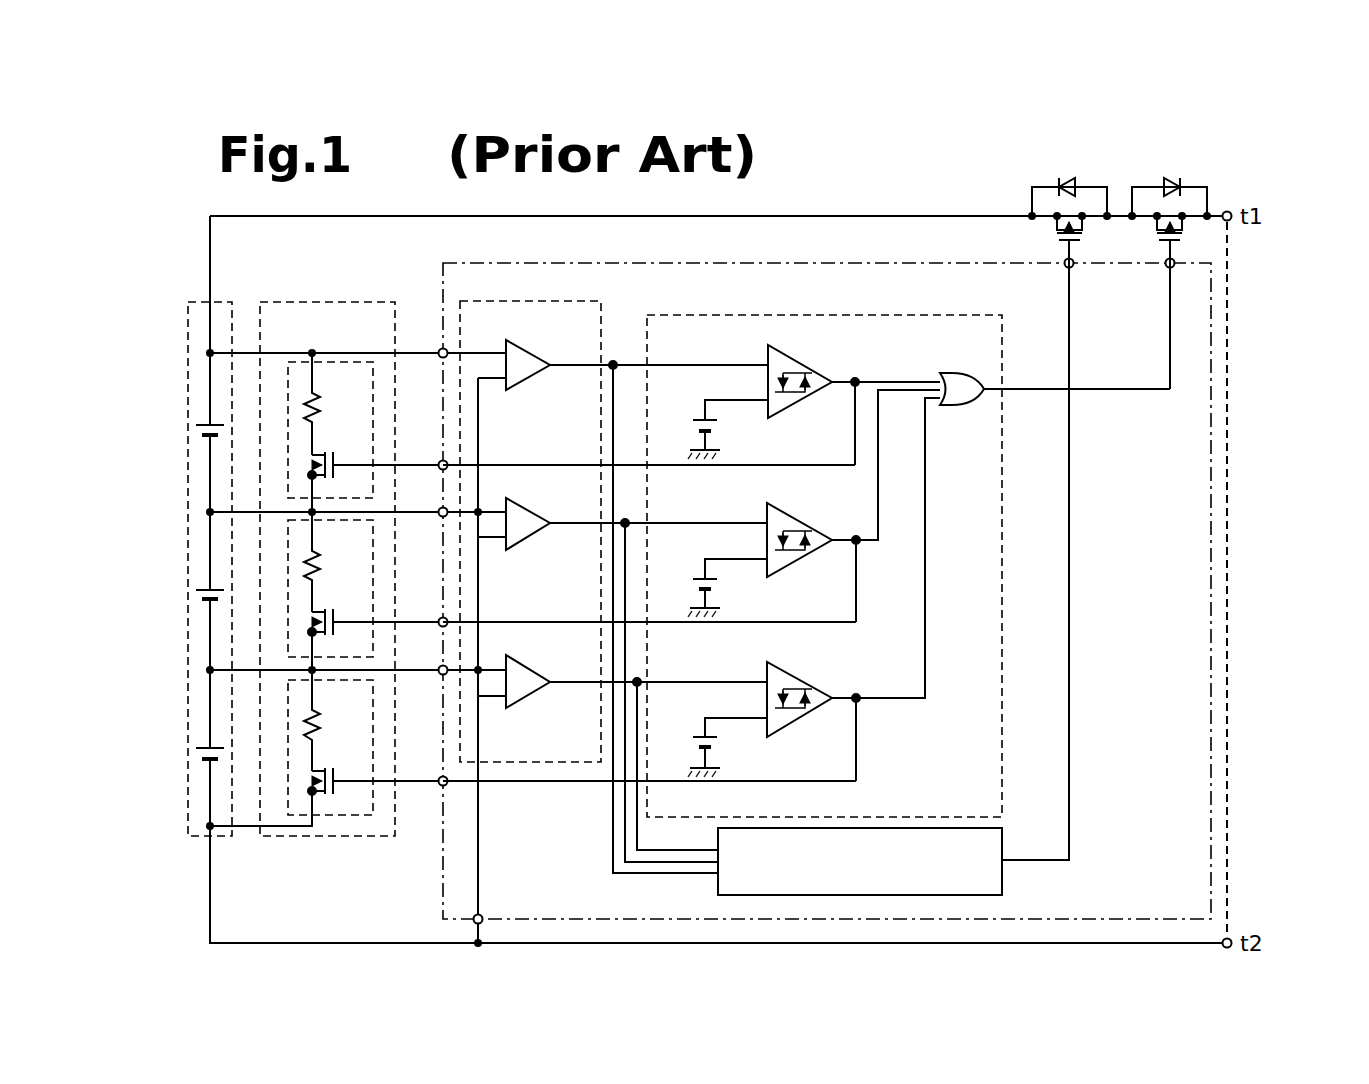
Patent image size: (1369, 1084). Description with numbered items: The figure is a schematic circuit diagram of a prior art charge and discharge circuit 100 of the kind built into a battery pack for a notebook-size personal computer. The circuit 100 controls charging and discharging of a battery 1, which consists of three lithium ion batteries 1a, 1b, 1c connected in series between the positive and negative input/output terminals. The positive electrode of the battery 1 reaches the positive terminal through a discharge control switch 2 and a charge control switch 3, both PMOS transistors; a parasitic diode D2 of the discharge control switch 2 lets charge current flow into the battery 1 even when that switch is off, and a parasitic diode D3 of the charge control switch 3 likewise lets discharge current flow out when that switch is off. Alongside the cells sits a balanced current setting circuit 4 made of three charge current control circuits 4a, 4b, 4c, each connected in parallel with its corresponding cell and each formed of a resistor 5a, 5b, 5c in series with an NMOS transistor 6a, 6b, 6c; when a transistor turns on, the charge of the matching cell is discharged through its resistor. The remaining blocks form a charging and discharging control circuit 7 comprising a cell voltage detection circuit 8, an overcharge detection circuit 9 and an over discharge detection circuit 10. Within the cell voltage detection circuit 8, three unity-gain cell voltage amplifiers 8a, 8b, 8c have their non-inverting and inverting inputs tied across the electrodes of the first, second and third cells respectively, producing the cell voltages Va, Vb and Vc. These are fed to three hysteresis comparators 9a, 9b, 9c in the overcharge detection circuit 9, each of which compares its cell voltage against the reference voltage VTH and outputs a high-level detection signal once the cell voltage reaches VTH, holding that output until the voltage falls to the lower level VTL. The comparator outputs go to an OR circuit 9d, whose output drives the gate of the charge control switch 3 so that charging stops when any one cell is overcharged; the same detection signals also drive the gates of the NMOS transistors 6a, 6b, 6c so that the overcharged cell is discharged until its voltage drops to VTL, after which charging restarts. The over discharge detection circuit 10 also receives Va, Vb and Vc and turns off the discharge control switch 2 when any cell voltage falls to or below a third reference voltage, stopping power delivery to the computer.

The battery 1 is at (192, 303).
The first lithium ion battery 1a is at (200, 425).
The second lithium ion battery 1b is at (200, 590).
The third lithium ion battery 1c is at (200, 748).
The discharge control switch 2 is at (1045, 180).
The charge control switch 3 is at (1192, 180).
The balanced current setting circuit 4 is at (365, 303).
The first charge current control circuit 4a is at (376, 385).
The second charge current control circuit 4b is at (376, 545).
The third charge current control circuit 4c is at (376, 705).
The resistor 5a is at (318, 403).
The resistor 5b is at (318, 562).
The resistor 5c is at (318, 722).
The NMOS transistor 6a is at (318, 458).
The NMOS transistor 6b is at (318, 615).
The NMOS transistor 6c is at (318, 774).
The charging and discharging control circuit 7 is at (465, 263).
The cell voltage detection circuit 8 is at (570, 303).
The first cell voltage amplifier 8a is at (530, 385).
The second cell voltage amplifier 8b is at (530, 543).
The third cell voltage amplifier 8c is at (530, 702).
The overcharge detection circuit 9 is at (793, 318).
The first comparator 9a is at (814, 392).
The second comparator 9b is at (814, 550).
The third comparator 9c is at (814, 708).
The OR circuit 9d is at (950, 406).
The over discharge detection circuit 10 is at (1003, 885).
The charge and discharge circuit 100 is at (1258, 336).
The parasitic diode D2 is at (1068, 180).
The parasitic diode D3 is at (1172, 180).